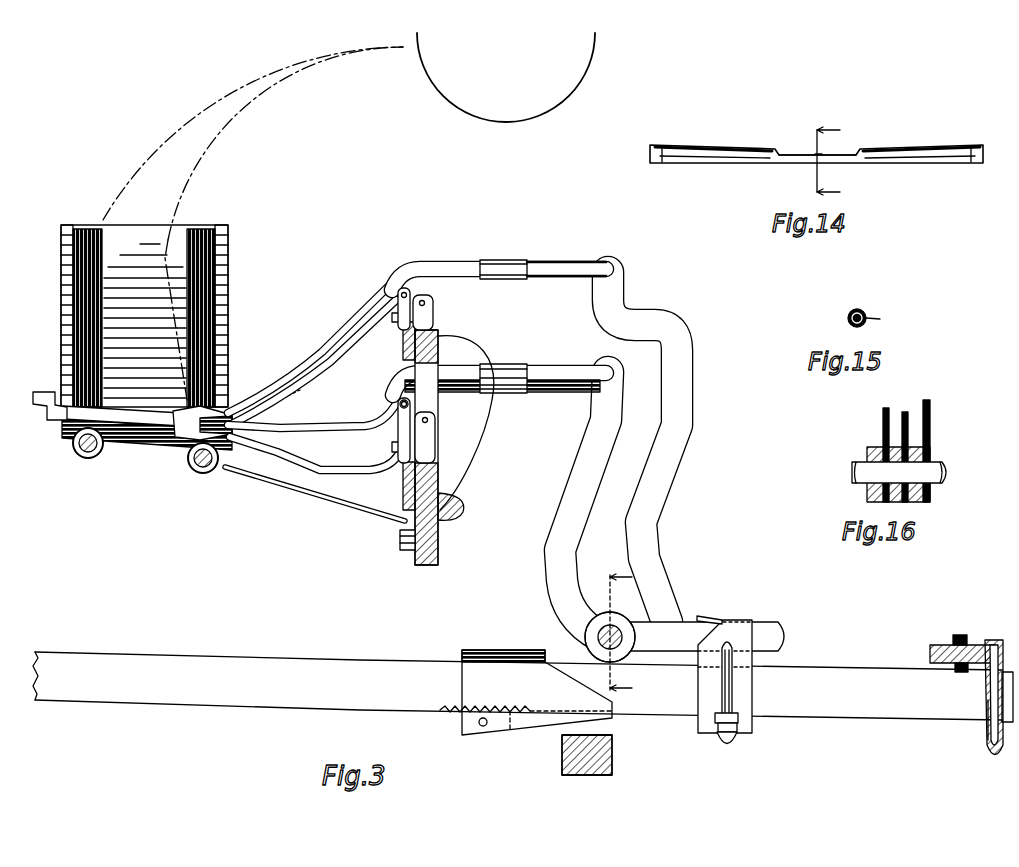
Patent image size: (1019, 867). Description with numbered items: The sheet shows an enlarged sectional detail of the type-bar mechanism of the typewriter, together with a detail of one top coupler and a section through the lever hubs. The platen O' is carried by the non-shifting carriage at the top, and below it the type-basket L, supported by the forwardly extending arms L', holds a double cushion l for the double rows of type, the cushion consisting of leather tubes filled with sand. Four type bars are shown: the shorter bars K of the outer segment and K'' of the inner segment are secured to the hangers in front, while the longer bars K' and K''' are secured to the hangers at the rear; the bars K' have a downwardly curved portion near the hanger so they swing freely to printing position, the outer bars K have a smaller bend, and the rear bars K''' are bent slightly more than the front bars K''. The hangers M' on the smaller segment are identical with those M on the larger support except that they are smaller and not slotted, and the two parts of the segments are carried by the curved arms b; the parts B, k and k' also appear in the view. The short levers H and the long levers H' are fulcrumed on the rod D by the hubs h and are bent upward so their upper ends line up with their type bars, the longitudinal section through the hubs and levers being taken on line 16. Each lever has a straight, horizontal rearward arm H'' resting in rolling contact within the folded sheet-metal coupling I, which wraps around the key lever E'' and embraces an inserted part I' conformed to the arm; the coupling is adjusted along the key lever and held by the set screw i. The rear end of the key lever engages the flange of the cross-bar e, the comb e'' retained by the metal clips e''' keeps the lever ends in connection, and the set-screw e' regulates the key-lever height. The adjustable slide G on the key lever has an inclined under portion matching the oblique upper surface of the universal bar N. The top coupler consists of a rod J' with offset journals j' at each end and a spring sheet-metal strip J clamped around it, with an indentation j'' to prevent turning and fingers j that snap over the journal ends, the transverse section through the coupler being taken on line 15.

In FIG. 3, the platen O' is at (506, 77).
In FIG. 3, the double cushion l is at (68, 336).
In FIG. 3, the arm bracket k' is at (45, 393).
In FIG. 3, the type-basket L is at (147, 439).
In FIG. 3, the arms L' is at (315, 494).
In FIG. 3, the shorter type bars of inner segment K'' is at (309, 351).
In FIG. 3, the longer type bars of inner segment K''' is at (313, 362).
In FIG. 3, the shorter type bars of outer segment K is at (312, 416).
In FIG. 3, the longer type bars of outer segment K' is at (314, 466).
In FIG. 3, the pivot pin k is at (390, 397).
In FIG. 3, the hangers M' is at (435, 309).
In FIG. 3, the lower link M is at (456, 430).
In FIG. 3, the curved arms b is at (478, 452).
In FIG. 3, the bracket B is at (442, 516).
In FIG. 3, the spring sheet metal strip J is at (499, 317).
In FIG. 14, the spring sheet metal strip J is at (817, 143).
In FIG. 15, the spring sheet metal strip J is at (865, 311).
In FIG. 3, the coupler rod J' is at (566, 256).
In FIG. 14, the coupler rod J' is at (816, 163).
In FIG. 15, the coupler rod J' is at (854, 307).
In FIG. 3, the short levers H is at (580, 504).
In FIG. 16, the short levers H is at (898, 451).
In FIG. 3, the long levers H' is at (667, 447).
In FIG. 3, the rearwardly projecting short arm H'' is at (708, 625).
In FIG. 3, the hubs h is at (623, 624).
In FIG. 16, the hubs h is at (868, 453).
In FIG. 3, the rod D is at (585, 637).
In FIG. 16, the rod D is at (947, 472).
In FIG. 3, the section line 16— 16 is at (615, 633).
In FIG. 3, the folded sheet metal coupling I is at (725, 662).
In FIG. 3, the inserted part I' is at (709, 607).
In FIG. 3, the set screw i is at (730, 737).
In FIG. 3, the key lever E'' is at (523, 676).
In FIG. 3, the adjustable slide G is at (521, 731).
In FIG. 3, the universal bar N is at (612, 764).
In FIG. 3, the cross-bar e is at (946, 650).
In FIG. 3, the set-screw e' is at (961, 630).
In FIG. 3, the comb e'' is at (998, 686).
In FIG. 3, the metal clip e''' is at (975, 727).
In FIG. 14, the fingers j is at (817, 138).
In FIG. 14, the offset studs or journals j' is at (818, 156).
In FIG. 14, the indentation or offset j'' is at (841, 140).
In FIG. 15, the indentation or offset j'' is at (882, 316).
In FIG. 14, the section line 15— 15 is at (822, 159).